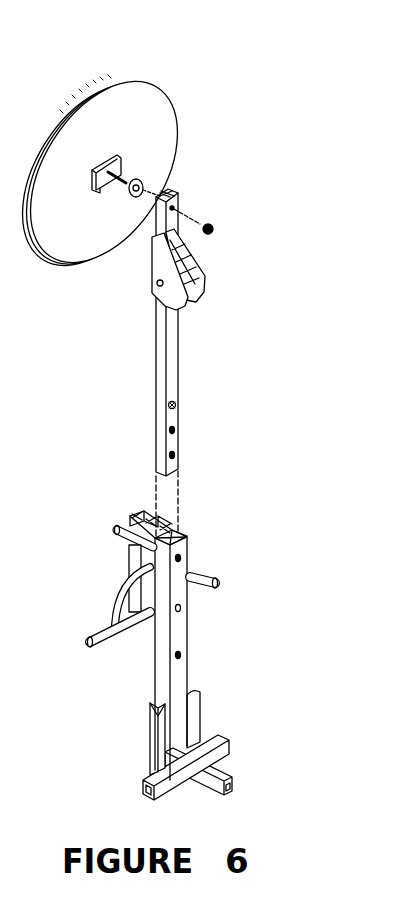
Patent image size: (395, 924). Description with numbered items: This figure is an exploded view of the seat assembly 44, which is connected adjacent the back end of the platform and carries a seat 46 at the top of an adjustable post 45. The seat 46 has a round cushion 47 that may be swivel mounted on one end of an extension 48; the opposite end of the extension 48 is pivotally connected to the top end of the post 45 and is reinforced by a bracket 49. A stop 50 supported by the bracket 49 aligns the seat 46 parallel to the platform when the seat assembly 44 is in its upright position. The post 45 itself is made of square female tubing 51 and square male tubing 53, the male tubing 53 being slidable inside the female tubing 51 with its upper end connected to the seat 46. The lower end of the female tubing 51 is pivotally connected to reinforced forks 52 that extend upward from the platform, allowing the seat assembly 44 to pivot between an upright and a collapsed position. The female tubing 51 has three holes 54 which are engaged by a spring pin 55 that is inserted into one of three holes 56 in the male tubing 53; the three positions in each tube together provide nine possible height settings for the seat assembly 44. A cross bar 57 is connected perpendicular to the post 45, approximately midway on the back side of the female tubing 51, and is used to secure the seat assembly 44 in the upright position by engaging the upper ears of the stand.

The seat assembly 44 is at (258, 305).
The post 45 is at (258, 492).
The seat 46 is at (145, 117).
The round cushion 47 is at (84, 90).
The extension 48 is at (178, 193).
The bracket 49 is at (158, 260).
The stop 50 is at (197, 260).
The square female tubing 51 is at (182, 545).
The reinforced forks 52 is at (155, 722).
The square male tubing 53 is at (175, 346).
The holes 54 is at (247, 655).
The spring pin 55 is at (176, 405).
The holes 56 is at (175, 431).
The cross bar 57 is at (110, 650).